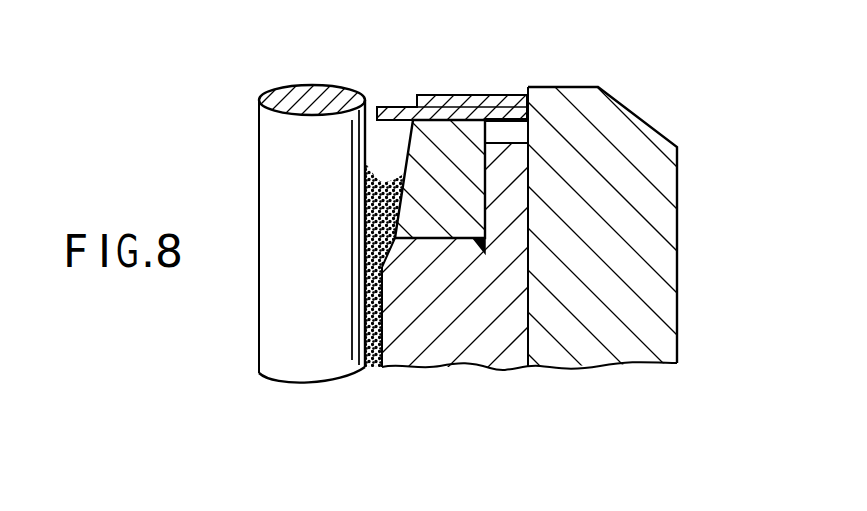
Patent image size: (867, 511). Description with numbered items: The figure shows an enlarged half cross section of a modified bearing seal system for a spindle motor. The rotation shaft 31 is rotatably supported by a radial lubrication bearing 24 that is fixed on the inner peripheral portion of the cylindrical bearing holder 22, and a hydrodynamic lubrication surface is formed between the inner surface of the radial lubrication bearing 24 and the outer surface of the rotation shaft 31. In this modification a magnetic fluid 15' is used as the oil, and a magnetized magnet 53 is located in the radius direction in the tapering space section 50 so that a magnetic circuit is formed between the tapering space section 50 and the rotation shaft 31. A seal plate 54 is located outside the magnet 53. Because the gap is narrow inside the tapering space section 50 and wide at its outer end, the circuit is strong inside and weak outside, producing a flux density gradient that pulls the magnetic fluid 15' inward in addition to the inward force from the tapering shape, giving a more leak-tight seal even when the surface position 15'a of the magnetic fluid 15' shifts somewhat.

The rotation shaft 31 is at (308, 188).
The tapering space section 50 is at (405, 173).
The seal plate 54 is at (393, 107).
The magnet 53 is at (448, 157).
The radial lubrication bearing 24 is at (374, 328).
The bearing holder 22 is at (677, 255).
The magnetic fluid 15' is at (287, 240).
The surface position of the magnetic fluid 15'a is at (265, 229).